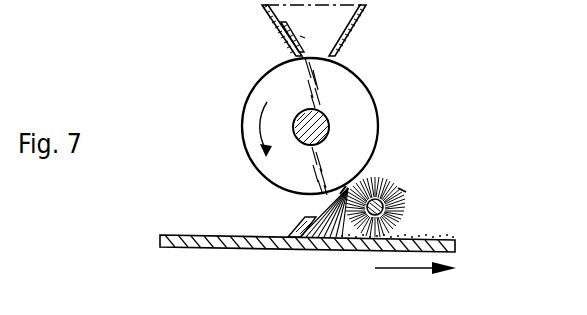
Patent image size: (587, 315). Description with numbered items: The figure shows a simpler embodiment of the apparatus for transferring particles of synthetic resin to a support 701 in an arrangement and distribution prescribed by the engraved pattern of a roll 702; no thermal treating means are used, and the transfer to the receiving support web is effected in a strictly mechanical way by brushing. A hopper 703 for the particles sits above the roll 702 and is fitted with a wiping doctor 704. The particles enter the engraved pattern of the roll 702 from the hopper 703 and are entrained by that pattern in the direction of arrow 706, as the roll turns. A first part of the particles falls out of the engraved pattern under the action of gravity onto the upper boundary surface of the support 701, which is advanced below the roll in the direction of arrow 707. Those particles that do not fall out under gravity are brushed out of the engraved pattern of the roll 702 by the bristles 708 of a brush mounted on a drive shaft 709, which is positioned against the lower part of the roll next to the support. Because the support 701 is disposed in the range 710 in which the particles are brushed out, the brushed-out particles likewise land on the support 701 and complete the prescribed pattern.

The support 701 is at (215, 247).
The roll 702 is at (272, 167).
The hopper 703 is at (272, 15).
The wiping doctor 704 is at (282, 47).
The arrow 706 is at (262, 123).
The arrow 707 is at (388, 260).
The bristles 708 is at (370, 190).
The drive shaft 709 is at (428, 160).
The range 710 is at (281, 242).